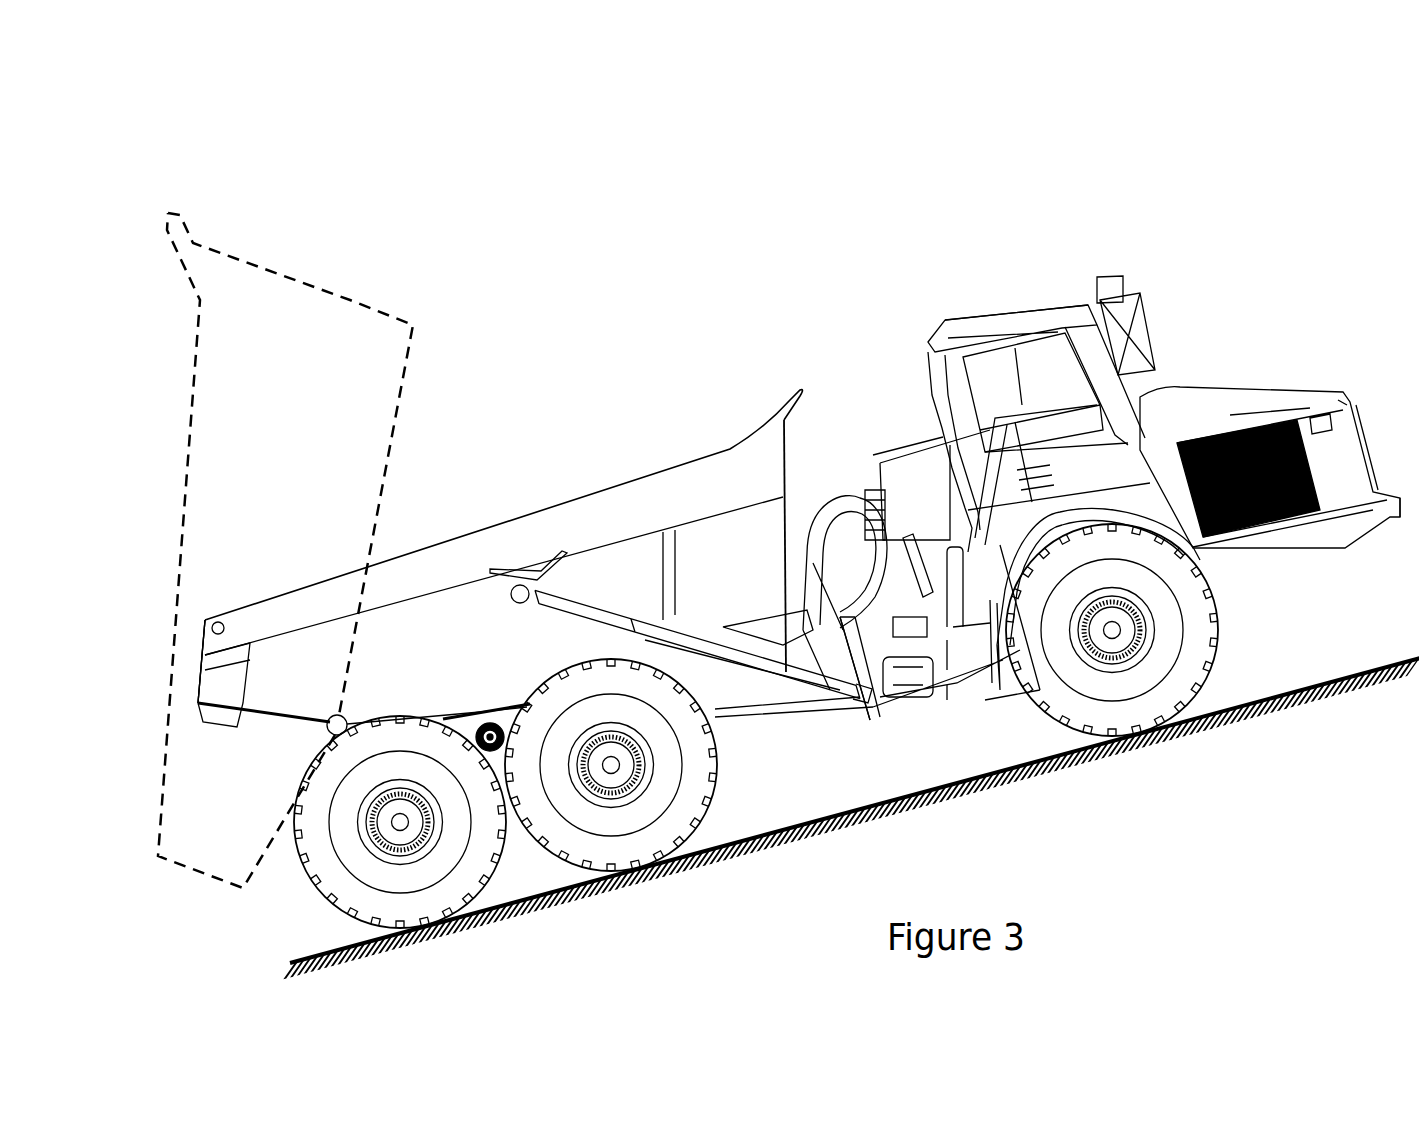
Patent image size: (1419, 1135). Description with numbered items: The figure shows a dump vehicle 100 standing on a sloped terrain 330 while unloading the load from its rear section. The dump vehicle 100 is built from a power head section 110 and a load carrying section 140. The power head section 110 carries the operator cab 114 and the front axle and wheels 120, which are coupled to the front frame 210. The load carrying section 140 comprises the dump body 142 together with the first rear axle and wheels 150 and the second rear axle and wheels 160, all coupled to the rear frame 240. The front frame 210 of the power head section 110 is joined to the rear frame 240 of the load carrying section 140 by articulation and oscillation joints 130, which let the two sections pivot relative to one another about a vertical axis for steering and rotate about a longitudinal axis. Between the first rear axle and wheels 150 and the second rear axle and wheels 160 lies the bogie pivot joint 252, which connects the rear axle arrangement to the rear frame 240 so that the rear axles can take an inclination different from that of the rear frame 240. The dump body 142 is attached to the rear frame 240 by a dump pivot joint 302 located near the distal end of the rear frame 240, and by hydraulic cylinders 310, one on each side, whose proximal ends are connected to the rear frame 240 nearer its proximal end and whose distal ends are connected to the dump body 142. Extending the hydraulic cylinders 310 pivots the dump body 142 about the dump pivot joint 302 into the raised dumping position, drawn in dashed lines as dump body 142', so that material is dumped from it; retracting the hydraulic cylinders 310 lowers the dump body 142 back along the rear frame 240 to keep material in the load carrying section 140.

The dump vehicle 100 is at (737, 287).
The power head section 110 is at (1239, 246).
The operator cab 114 is at (992, 316).
The front axle and wheels 120 is at (998, 712).
The articulation and oscillation joints 130 is at (903, 735).
The load carrying section 140 is at (578, 324).
The dump body 142 is at (505, 558).
The dump body in dump position 142' is at (288, 550).
The first rear axle and wheels 150 is at (746, 784).
The second rear axle and wheels 160 is at (279, 894).
The front frame 210 is at (1281, 612).
The rear frame 240 is at (793, 736).
The bogie pivot joint 252 is at (485, 722).
The dump pivot joint 302 is at (328, 729).
The hydraulic cylinders 310 is at (577, 618).
The sloped terrain 330 is at (1330, 681).